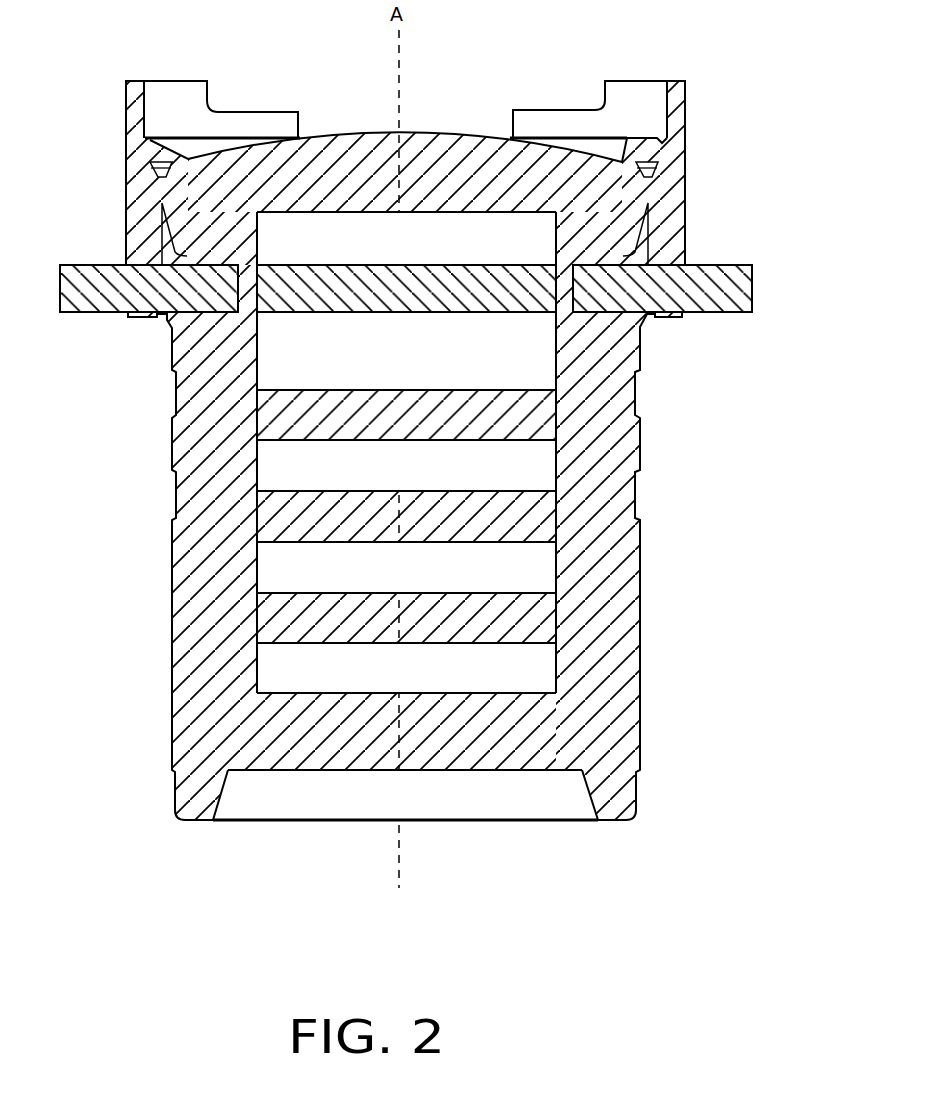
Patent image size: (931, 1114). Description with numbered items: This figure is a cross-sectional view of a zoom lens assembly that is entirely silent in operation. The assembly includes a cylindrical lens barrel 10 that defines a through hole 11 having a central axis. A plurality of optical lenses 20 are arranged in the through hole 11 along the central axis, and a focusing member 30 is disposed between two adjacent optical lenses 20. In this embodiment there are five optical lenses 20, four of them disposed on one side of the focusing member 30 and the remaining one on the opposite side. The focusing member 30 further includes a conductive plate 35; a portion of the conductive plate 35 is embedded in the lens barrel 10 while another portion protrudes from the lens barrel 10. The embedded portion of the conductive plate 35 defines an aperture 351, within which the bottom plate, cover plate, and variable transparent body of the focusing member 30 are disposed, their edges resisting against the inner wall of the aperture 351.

The lens barrel 10 is at (595, 558).
The through hole 11 is at (437, 342).
The optical lenses 20 is at (352, 178).
The focusing member 30 is at (481, 311).
The conductive plate 35 is at (728, 290).
The aperture 351 is at (551, 285).